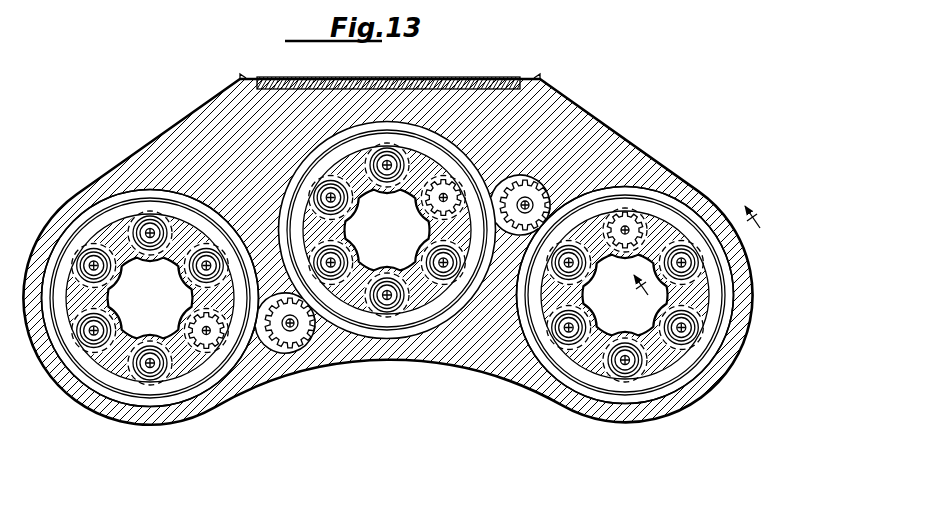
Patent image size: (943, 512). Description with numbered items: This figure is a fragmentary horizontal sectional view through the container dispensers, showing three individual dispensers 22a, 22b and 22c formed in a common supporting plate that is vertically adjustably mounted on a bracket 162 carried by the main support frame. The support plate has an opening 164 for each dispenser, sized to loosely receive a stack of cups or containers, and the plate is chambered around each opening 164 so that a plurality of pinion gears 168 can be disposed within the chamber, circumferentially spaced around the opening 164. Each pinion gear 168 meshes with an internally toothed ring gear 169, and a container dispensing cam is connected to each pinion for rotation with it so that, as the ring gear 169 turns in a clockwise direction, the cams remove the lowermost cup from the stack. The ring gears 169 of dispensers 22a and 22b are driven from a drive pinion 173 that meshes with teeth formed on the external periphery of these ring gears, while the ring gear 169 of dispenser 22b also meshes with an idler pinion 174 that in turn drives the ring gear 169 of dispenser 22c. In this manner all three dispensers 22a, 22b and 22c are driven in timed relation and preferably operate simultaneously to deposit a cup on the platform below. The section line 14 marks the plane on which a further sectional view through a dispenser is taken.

The section line 14 is at (702, 261).
The container dispenser 22a is at (693, 183).
The container dispenser 22b is at (384, 367).
The container dispenser 22c is at (140, 433).
The bracket 162 is at (364, 78).
The opening 164 is at (388, 264).
The pinion gear 168 is at (440, 177).
The ring gear 169 is at (438, 325).
The drive pinion 173 is at (538, 216).
The idler pinion 174 is at (287, 342).